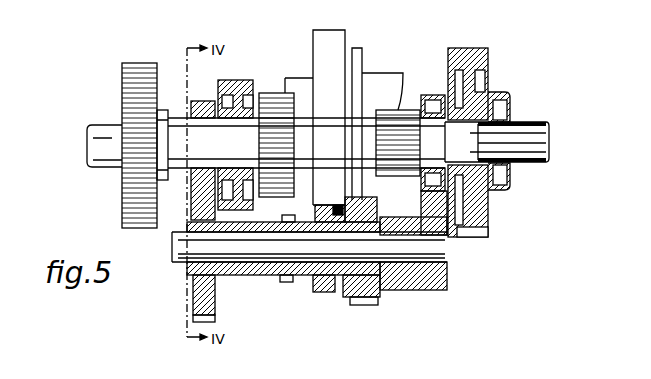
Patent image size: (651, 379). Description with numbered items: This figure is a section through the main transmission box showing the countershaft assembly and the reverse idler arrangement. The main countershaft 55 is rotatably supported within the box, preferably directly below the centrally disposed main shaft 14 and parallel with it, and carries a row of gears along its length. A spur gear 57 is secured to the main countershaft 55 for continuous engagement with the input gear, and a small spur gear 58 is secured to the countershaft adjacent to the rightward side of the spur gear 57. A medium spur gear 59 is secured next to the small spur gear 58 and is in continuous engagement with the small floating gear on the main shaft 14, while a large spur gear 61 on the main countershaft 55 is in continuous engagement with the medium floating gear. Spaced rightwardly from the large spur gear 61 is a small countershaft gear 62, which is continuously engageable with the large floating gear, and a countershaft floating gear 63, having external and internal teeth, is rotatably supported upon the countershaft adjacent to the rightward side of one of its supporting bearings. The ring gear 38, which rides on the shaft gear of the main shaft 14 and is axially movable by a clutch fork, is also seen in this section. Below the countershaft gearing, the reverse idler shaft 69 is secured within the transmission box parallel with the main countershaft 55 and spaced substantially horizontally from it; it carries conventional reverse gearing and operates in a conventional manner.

The main shaft 14 is at (376, 82).
The ring gear 38 is at (318, 47).
The main countershaft 55 is at (92, 130).
The spur gear 57 is at (128, 194).
The small spur gear 58 is at (207, 100).
The medium spur gear 59 is at (237, 79).
The large spur gear 61 is at (276, 125).
The small countershaft gear 62 is at (403, 128).
The countershaft floating gear 63 is at (488, 92).
The reverse idler shaft 69 is at (257, 255).